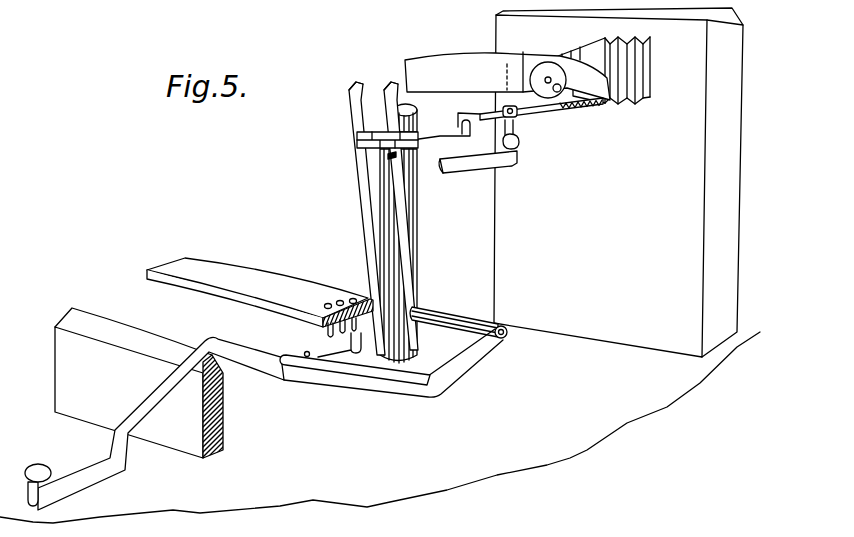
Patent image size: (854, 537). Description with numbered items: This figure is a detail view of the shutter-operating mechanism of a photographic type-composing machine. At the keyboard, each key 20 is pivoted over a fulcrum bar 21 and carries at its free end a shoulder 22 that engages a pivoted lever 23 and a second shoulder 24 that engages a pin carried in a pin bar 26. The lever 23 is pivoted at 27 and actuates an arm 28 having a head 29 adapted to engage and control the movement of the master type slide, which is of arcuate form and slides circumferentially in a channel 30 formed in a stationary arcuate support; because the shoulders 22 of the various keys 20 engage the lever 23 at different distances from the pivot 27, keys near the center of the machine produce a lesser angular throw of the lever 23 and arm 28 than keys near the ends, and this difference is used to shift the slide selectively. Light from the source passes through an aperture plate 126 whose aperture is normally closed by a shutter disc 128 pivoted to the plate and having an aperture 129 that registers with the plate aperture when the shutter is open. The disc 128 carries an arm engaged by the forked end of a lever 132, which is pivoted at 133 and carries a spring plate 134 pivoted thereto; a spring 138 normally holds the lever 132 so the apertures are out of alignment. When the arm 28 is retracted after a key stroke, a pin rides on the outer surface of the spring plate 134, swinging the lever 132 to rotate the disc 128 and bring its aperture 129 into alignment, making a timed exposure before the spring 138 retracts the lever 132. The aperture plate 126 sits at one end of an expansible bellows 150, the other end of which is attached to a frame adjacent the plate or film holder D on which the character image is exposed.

The key 20 is at (38, 465).
The fulcrum bar 21 is at (147, 343).
The shoulder 22 is at (300, 373).
The pivoted lever 23 is at (298, 354).
The shoulder 24 is at (356, 346).
The pin bar 26 is at (227, 269).
The pivot 27 is at (507, 327).
The arm 28 is at (360, 210).
The head 29 is at (396, 88).
The channel 30 is at (448, 65).
The aperture plate 126 is at (613, 102).
The disc 128 is at (542, 70).
The aperture 129 is at (557, 92).
The lever 132 is at (538, 115).
The pivot 133 is at (520, 143).
The spring plate 134 is at (462, 108).
The spring 138 is at (582, 110).
The expansible bellows 150 is at (562, 53).
The plate or film holder D is at (733, 238).